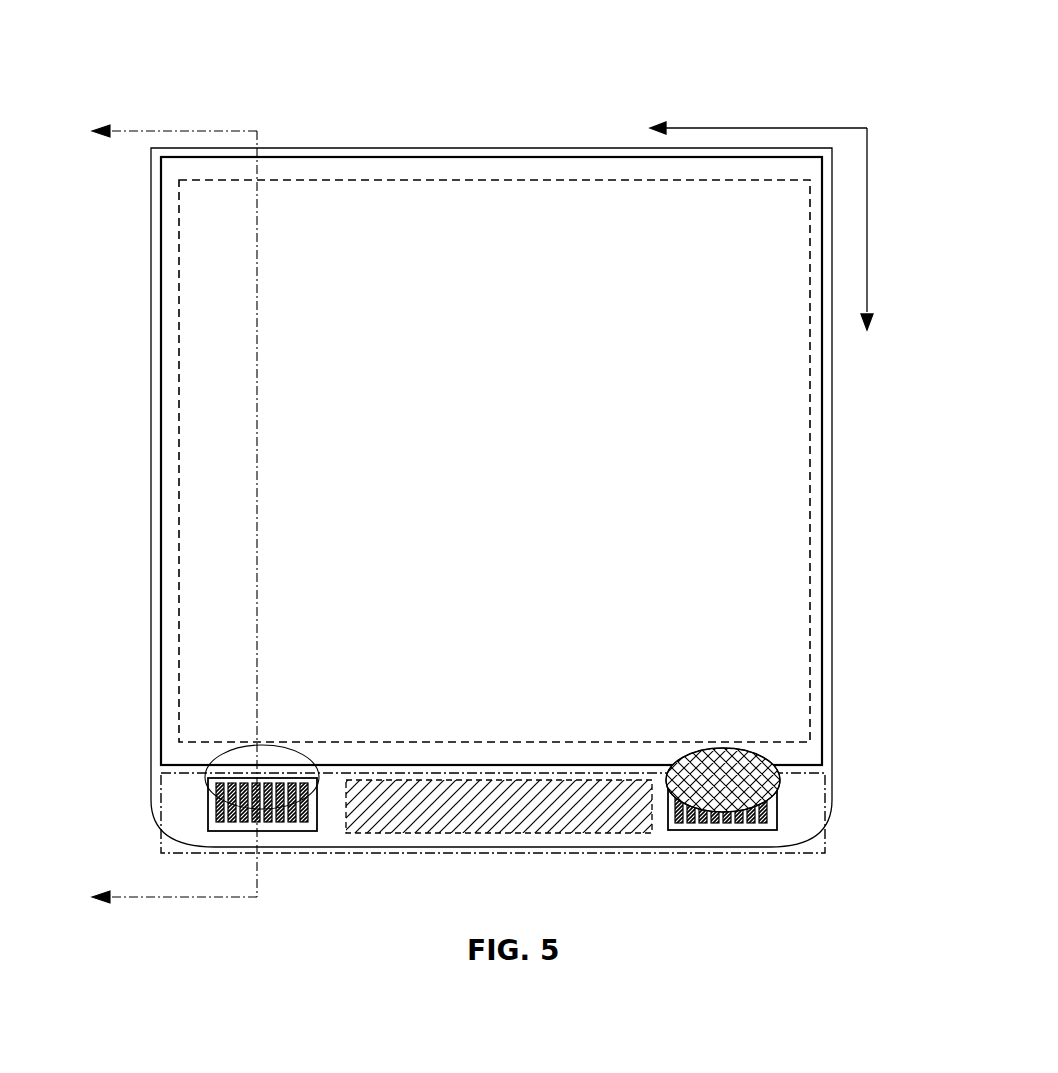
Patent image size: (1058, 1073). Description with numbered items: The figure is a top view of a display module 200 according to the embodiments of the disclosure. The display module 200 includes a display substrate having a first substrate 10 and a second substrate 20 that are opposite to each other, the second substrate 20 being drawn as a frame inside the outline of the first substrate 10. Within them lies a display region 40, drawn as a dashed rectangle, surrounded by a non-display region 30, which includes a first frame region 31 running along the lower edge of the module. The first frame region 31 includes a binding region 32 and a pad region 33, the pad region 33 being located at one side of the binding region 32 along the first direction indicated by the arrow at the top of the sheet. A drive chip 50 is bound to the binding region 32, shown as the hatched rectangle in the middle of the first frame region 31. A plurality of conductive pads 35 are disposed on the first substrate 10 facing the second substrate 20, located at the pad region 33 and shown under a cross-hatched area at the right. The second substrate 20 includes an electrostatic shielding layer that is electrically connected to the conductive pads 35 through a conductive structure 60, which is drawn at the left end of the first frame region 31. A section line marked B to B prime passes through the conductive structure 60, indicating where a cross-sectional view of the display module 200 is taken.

The display module 200 is at (506, 459).
The first substrate 10 is at (832, 657).
The second substrate 20 is at (823, 445).
The display region 40 is at (798, 553).
The non-display region 30 is at (825, 802).
The first frame region 31 is at (493, 813).
The binding region 32 is at (500, 833).
The drive chip 50 is at (499, 806).
The pad region 33 is at (720, 830).
The conductive pads 35 is at (767, 818).
The conductive structure 60 is at (227, 765).